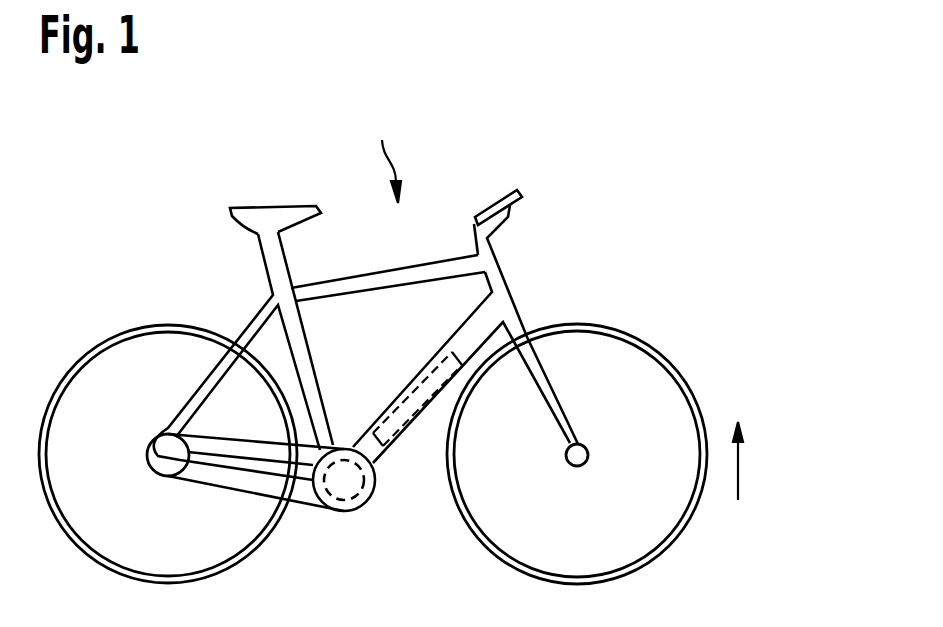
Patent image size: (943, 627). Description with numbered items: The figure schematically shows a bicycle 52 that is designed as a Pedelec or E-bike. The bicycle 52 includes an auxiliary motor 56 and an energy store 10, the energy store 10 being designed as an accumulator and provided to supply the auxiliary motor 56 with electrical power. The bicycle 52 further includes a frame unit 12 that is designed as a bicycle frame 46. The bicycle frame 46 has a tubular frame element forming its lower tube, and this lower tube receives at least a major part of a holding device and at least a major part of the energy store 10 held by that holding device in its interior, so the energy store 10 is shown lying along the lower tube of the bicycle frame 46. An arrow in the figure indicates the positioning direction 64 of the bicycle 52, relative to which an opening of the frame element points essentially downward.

The energy store 10 is at (404, 432).
The frame unit 12 is at (366, 342).
The bicycle frame 46 is at (353, 283).
The bicycle 52 is at (384, 153).
The auxiliary motor 56 is at (355, 515).
The positioning direction 64 is at (738, 468).